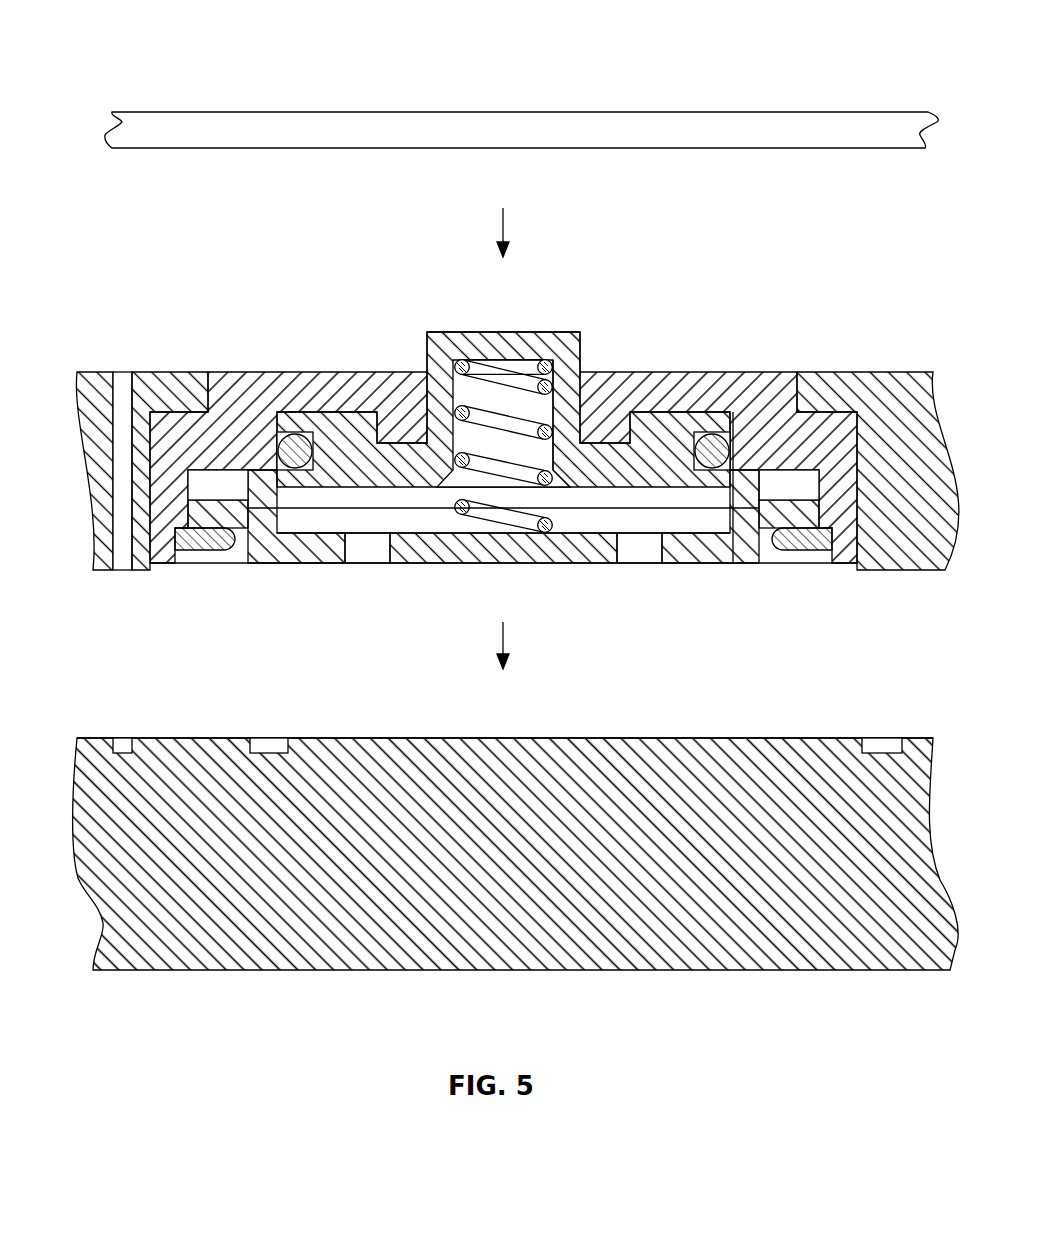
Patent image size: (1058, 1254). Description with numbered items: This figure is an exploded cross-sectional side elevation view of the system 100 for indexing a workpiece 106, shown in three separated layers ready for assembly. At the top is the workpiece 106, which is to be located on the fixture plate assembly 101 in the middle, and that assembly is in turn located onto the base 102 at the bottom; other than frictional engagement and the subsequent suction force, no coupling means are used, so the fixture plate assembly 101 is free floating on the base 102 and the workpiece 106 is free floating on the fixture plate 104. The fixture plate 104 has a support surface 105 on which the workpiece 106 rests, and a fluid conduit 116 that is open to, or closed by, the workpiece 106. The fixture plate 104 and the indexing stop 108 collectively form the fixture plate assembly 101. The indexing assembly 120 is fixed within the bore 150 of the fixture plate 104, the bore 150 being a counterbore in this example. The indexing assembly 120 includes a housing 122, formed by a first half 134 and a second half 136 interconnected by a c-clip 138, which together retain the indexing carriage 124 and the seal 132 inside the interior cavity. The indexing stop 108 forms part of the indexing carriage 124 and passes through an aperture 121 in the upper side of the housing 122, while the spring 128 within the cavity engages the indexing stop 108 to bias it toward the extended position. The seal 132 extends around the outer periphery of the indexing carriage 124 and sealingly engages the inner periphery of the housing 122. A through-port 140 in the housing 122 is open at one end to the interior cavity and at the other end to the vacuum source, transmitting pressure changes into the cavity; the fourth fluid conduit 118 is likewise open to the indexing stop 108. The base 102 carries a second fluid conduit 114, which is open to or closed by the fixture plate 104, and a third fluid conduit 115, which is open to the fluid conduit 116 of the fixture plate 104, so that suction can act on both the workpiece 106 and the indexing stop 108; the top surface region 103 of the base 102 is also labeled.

The system 100 is at (870, 50).
The fixture plate assembly 101 is at (928, 357).
The base 102 is at (318, 978).
The top surface of base plate 103 is at (175, 738).
The fixture plate 104 is at (168, 366).
The support surface 105 is at (193, 372).
The workpiece 106 is at (745, 112).
The indexing stop 108 is at (552, 332).
The second fluid conduit 114 is at (876, 748).
The third fluid conduit 115 is at (122, 745).
The fluid conduit 116 is at (109, 500).
The fourth fluid conduit 118 is at (265, 748).
The indexing assembly 120 is at (663, 366).
The aperture 121 is at (568, 388).
The housing 122 is at (307, 569).
The indexing carriage 124 is at (672, 428).
The spring 128 is at (432, 355).
The seal 132 is at (296, 450).
The first half 134 is at (755, 372).
The second half 136 is at (705, 548).
The c-clip 138 is at (787, 548).
The through-port 140 is at (352, 548).
The bore 150 is at (150, 527).